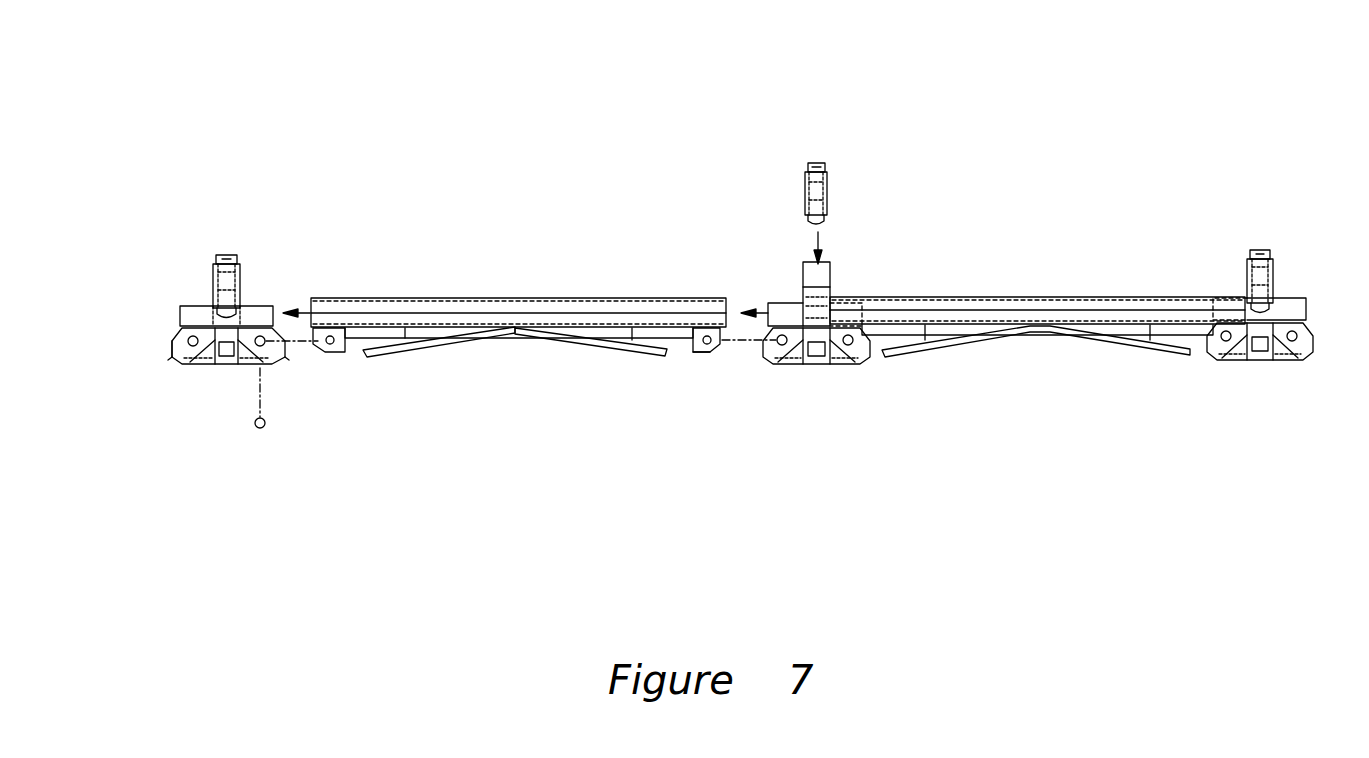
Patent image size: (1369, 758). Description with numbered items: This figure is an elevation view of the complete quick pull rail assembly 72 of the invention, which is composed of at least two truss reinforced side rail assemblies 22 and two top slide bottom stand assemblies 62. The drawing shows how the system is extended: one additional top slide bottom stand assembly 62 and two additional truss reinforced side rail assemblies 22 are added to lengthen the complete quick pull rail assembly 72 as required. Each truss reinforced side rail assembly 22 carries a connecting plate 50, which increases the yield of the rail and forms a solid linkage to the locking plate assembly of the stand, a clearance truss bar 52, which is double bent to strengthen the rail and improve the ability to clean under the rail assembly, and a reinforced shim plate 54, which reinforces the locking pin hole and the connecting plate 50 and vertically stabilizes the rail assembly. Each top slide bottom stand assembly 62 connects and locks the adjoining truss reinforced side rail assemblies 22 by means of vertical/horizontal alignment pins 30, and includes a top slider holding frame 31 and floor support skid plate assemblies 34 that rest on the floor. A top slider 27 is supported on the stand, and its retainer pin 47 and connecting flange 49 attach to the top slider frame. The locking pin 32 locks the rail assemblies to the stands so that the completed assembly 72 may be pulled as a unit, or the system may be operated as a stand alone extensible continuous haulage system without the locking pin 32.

The truss reinforced side rail assembly 22 is at (503, 272).
The complete quick pull rail assembly 72 is at (1007, 258).
The top slider 27 is at (230, 255).
The vertical/horizontal alignment pin 30 is at (182, 306).
The top slider holding frame 31 is at (803, 262).
The locking pin 32 is at (266, 424).
The floor support skid plate assembly 34 is at (228, 368).
The retainer pin 47 is at (828, 183).
The connecting flange 49 is at (808, 163).
The connecting plate 50 is at (678, 356).
The clearance truss bar 52 is at (518, 338).
The reinforced shim plate 54 is at (700, 356).
The top slide bottom stand assembly 62 is at (150, 332).